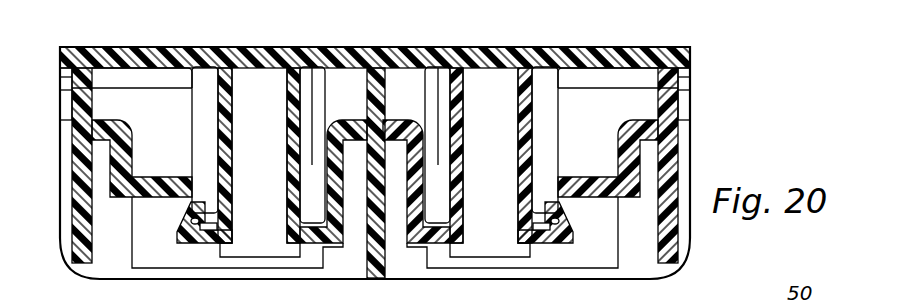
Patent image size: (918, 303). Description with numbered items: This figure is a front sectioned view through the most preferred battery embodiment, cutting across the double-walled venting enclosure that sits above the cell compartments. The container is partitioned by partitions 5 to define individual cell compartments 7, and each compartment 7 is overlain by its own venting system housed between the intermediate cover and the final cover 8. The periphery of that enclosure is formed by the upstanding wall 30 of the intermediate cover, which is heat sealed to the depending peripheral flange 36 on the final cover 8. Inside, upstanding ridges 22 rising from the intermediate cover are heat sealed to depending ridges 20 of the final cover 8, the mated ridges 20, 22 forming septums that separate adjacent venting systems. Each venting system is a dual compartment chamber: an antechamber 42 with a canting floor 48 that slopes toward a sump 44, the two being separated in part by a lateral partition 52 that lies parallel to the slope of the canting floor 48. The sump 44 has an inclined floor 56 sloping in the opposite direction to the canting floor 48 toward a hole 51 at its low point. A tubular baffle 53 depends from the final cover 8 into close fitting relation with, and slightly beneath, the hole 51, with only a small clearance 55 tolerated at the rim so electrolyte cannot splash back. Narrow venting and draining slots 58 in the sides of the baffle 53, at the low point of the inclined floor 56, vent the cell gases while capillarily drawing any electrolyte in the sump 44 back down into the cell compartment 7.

The partition 5 is at (83, 220).
The cell compartment 7 is at (112, 247).
The final cover 8 is at (290, 58).
The depending ridge 20 is at (83, 77).
The upstanding ridge 22 is at (85, 100).
The upstanding wall 30 is at (112, 100).
The depending peripheral flange 36 is at (137, 78).
The antechamber 42 is at (165, 86).
The sump 44 is at (313, 70).
The canting floor 48 is at (157, 187).
The hole 51 is at (300, 237).
The lateral partition 52 is at (190, 134).
The tubular baffle 53 is at (227, 100).
The clearance 55 is at (220, 240).
The inclined floor 56 is at (182, 228).
The venting/draining slot 58 is at (228, 190).